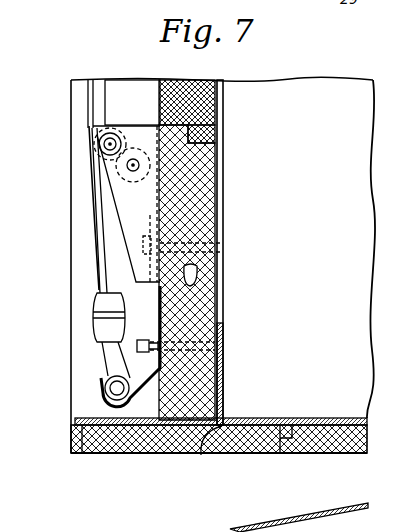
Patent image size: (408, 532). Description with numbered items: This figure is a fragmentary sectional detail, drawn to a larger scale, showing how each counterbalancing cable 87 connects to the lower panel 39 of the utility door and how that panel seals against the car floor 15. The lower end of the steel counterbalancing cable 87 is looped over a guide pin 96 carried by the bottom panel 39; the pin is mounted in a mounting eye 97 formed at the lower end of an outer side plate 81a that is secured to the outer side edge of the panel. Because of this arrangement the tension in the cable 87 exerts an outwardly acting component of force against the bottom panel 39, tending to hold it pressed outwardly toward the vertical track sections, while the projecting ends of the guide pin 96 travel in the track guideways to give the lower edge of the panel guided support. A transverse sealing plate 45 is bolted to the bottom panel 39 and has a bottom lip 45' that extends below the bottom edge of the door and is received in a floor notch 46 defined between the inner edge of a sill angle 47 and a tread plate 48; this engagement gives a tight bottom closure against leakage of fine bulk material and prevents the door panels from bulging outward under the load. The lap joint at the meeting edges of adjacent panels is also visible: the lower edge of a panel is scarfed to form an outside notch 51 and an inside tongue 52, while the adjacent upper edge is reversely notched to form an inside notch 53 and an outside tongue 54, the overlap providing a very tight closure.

The counterbalancing cable 87 is at (88, 97).
The outside notch 51 is at (154, 123).
The inside tongue 52 is at (190, 128).
The inside notch 53 is at (213, 137).
The outside tongue 54 is at (158, 147).
The lower panel 39 is at (200, 296).
The outer side plate 81a is at (155, 320).
The guide pin 96 is at (117, 388).
The mounting eye 97 is at (100, 401).
The transverse sealing plate 45 is at (241, 252).
The bottom lip 45' is at (206, 456).
The floor notch 46 is at (228, 419).
The sill angle 47 is at (130, 455).
The tread plate 48 is at (310, 422).
The floor 15 is at (345, 448).